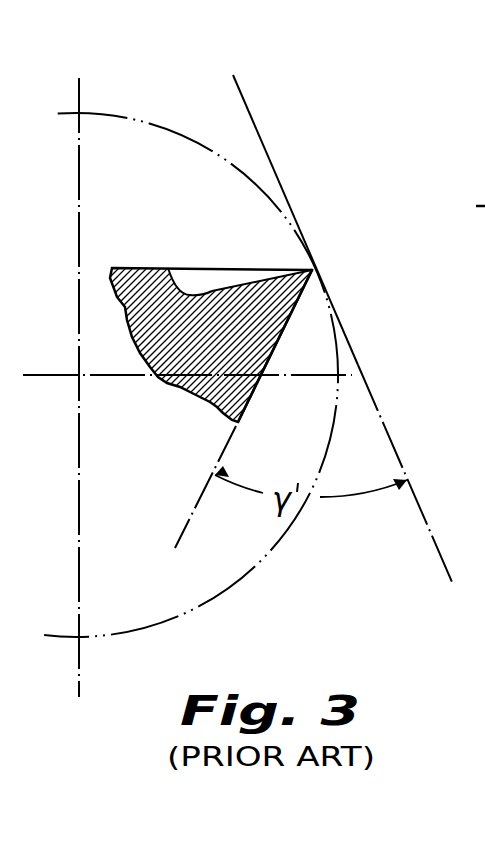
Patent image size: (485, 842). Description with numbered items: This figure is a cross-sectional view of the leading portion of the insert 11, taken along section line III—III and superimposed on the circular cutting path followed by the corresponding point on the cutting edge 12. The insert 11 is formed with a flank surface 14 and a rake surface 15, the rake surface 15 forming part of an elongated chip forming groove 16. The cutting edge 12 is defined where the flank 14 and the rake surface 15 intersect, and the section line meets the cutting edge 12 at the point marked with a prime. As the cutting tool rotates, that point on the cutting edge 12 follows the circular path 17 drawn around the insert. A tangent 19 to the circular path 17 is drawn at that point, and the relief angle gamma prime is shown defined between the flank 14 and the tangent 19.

The insert 11 is at (136, 267).
The cutting edge 12 is at (313, 270).
The flank surface 14 is at (284, 328).
The rake surface 15 is at (235, 288).
The chip forming groove 16 is at (192, 280).
The circular path 17 is at (112, 110).
The tangent 19 is at (299, 68).